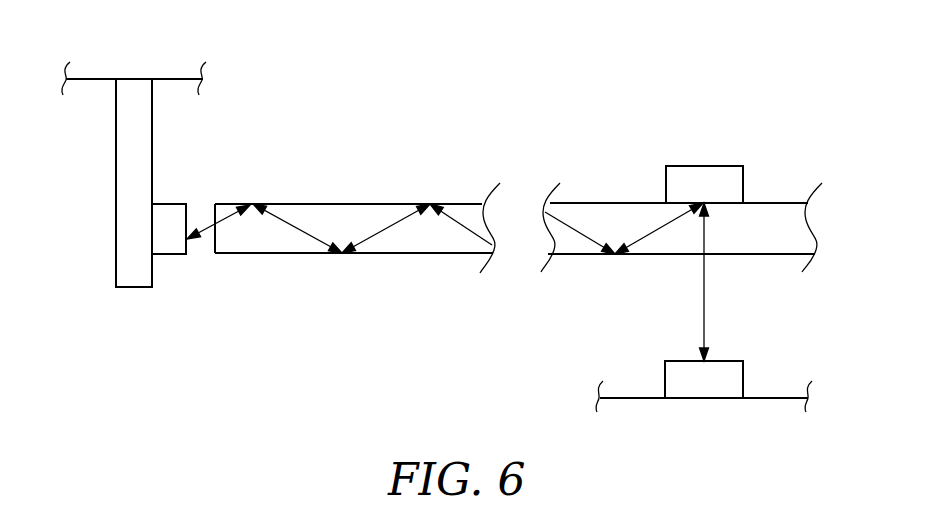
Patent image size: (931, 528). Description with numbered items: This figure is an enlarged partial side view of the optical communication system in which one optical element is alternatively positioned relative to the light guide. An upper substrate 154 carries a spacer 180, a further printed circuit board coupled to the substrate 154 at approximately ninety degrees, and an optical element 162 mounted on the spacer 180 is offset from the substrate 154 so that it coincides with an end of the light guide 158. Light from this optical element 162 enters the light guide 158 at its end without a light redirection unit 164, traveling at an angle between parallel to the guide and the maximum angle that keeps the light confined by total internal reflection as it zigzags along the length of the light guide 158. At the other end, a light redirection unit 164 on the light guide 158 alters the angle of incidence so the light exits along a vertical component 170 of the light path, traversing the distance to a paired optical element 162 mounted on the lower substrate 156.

The substrate 154 is at (90, 78).
The spacer 180 is at (147, 140).
The optical element 162 is at (170, 247).
The light guide 158 is at (427, 245).
The light redirection unit 164 is at (738, 175).
The vertical component 170 is at (706, 315).
The substrate 156 is at (783, 398).